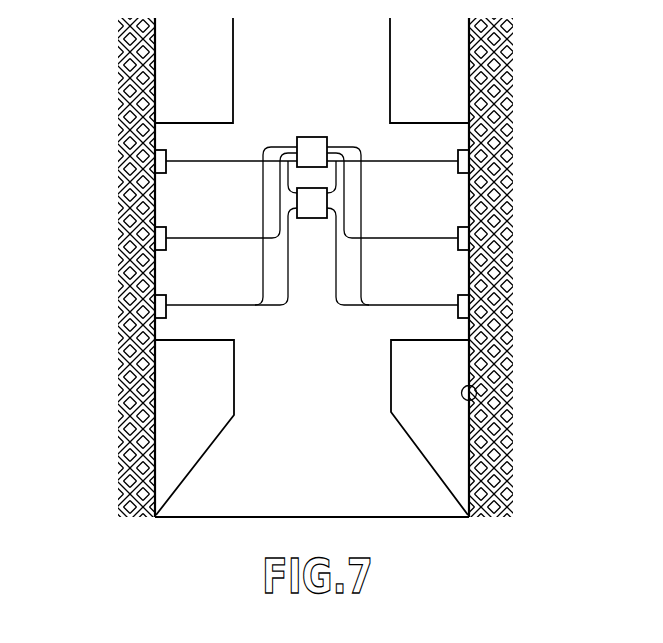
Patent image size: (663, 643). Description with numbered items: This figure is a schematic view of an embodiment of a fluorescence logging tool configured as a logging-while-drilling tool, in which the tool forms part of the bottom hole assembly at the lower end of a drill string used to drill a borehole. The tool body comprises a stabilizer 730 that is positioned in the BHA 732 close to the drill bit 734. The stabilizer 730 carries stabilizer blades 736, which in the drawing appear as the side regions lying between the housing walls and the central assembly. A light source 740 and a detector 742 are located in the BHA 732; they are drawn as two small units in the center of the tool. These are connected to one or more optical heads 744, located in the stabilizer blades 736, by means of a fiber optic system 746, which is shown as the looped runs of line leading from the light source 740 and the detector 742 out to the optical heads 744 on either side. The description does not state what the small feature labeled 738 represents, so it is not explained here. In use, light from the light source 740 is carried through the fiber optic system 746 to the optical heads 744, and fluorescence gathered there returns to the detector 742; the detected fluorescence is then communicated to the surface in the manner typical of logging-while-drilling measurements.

The stabilizer 730 is at (406, 350).
The BHA 732 is at (342, 57).
The drill bit 734 is at (353, 480).
The stabilizer blades 736 is at (245, 217).
The port 738 is at (470, 400).
The light source 740 is at (312, 137).
The detector 742 is at (311, 219).
The optical heads 744 is at (155, 159).
The fiber optic system 746 is at (349, 313).